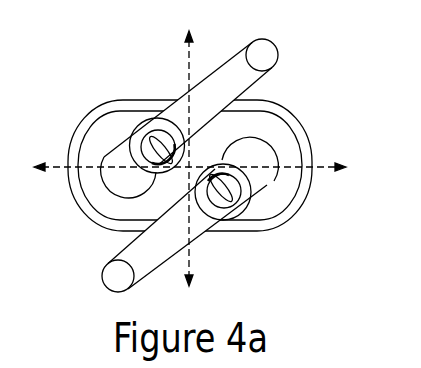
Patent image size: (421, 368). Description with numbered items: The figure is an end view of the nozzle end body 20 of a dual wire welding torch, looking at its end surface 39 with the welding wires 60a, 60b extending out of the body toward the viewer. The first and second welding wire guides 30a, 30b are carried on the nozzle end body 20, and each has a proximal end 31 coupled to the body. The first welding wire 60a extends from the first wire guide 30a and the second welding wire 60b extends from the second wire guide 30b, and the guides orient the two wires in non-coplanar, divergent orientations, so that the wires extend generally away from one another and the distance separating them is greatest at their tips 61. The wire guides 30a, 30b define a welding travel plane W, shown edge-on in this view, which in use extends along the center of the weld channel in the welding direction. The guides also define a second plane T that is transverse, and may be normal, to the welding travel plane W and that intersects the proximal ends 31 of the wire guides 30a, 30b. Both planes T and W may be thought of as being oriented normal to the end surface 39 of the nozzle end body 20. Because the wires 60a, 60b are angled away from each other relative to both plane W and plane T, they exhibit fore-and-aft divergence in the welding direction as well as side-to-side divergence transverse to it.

The nozzle end body 20 is at (69, 152).
The proximal end 31 is at (272, 141).
The first welding wire guide 30a is at (113, 180).
The second welding wire guide 30b is at (275, 195).
The end surface 39 is at (113, 154).
The first welding wire 60a is at (255, 74).
The second welding wire 60b is at (200, 211).
The tip 61 is at (267, 60).
The welding travel plane W is at (188, 82).
The transverse plane T is at (316, 168).